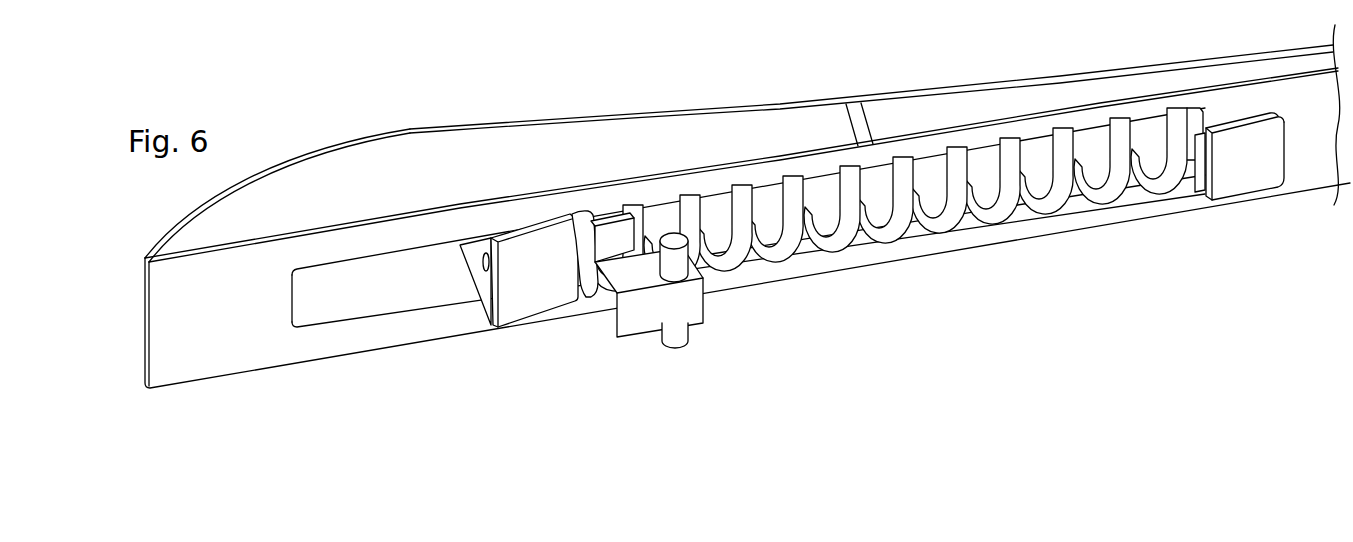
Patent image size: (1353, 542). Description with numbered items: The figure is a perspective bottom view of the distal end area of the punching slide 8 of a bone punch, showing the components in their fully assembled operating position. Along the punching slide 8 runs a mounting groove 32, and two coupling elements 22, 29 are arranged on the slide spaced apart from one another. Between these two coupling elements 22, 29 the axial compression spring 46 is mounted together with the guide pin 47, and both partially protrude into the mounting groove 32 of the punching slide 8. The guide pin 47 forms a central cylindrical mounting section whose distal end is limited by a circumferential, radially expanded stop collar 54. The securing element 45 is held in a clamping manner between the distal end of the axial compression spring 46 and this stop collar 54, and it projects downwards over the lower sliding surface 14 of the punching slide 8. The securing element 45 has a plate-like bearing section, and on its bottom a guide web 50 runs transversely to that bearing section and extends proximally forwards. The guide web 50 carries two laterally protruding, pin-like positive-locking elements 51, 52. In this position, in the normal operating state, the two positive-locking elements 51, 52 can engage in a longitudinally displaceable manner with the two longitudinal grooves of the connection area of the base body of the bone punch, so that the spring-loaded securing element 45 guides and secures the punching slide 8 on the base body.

The lower sliding surface 14 is at (350, 253).
The punching slide 8 is at (705, 122).
The mounting groove 32 is at (895, 154).
The guide pin 47 is at (1045, 163).
The axial compression spring 46 is at (1177, 125).
The coupling element 22 is at (1245, 182).
The coupling element 29 is at (522, 312).
The stop collar 54 is at (583, 272).
The securing element 45 is at (607, 240).
The guide web 50 is at (708, 312).
The positive-locking element 51 is at (678, 266).
The positive-locking element 52 is at (680, 347).